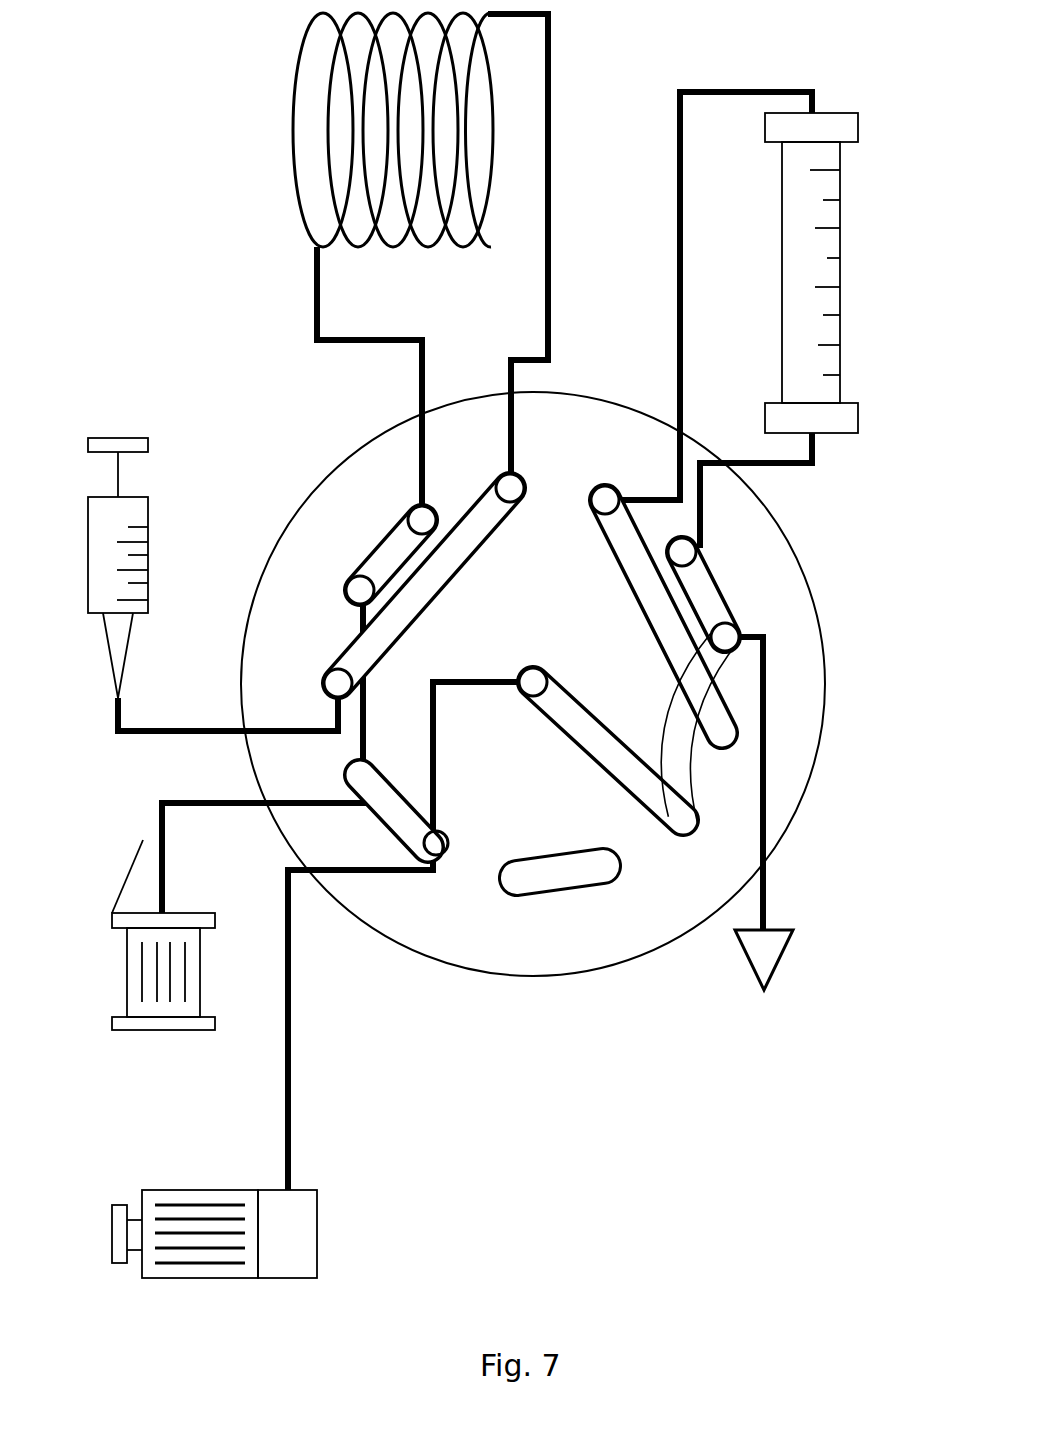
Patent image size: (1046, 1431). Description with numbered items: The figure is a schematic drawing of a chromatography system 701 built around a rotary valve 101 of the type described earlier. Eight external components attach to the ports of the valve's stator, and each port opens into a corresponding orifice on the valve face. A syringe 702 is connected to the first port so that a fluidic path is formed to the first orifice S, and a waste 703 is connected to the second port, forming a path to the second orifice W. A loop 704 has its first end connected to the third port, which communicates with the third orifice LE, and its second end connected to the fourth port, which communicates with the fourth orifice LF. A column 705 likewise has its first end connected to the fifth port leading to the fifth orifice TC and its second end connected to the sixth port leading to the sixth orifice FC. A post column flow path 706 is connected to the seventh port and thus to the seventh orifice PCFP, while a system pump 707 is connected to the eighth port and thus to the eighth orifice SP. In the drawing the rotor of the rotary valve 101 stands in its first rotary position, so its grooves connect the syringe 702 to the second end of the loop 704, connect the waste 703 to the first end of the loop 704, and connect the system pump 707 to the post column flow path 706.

The chromatography system 701 is at (178, 63).
The syringe 702 is at (90, 438).
The waste 703 is at (165, 1032).
The loop 704 is at (293, 130).
The column 705 is at (840, 258).
The post column flow path 706 is at (766, 977).
The system pump 707 is at (258, 1280).
The rotary valve 101 is at (800, 555).
The third orifice LE is at (410, 519).
The fourth orifice LF is at (504, 475).
The second orifice W is at (346, 591).
The first orifice S is at (324, 684).
The eighth orifice SP is at (526, 698).
The fifth orifice TC is at (603, 486).
The sixth orifice FC is at (697, 552).
The seventh orifice PCFP is at (740, 637).